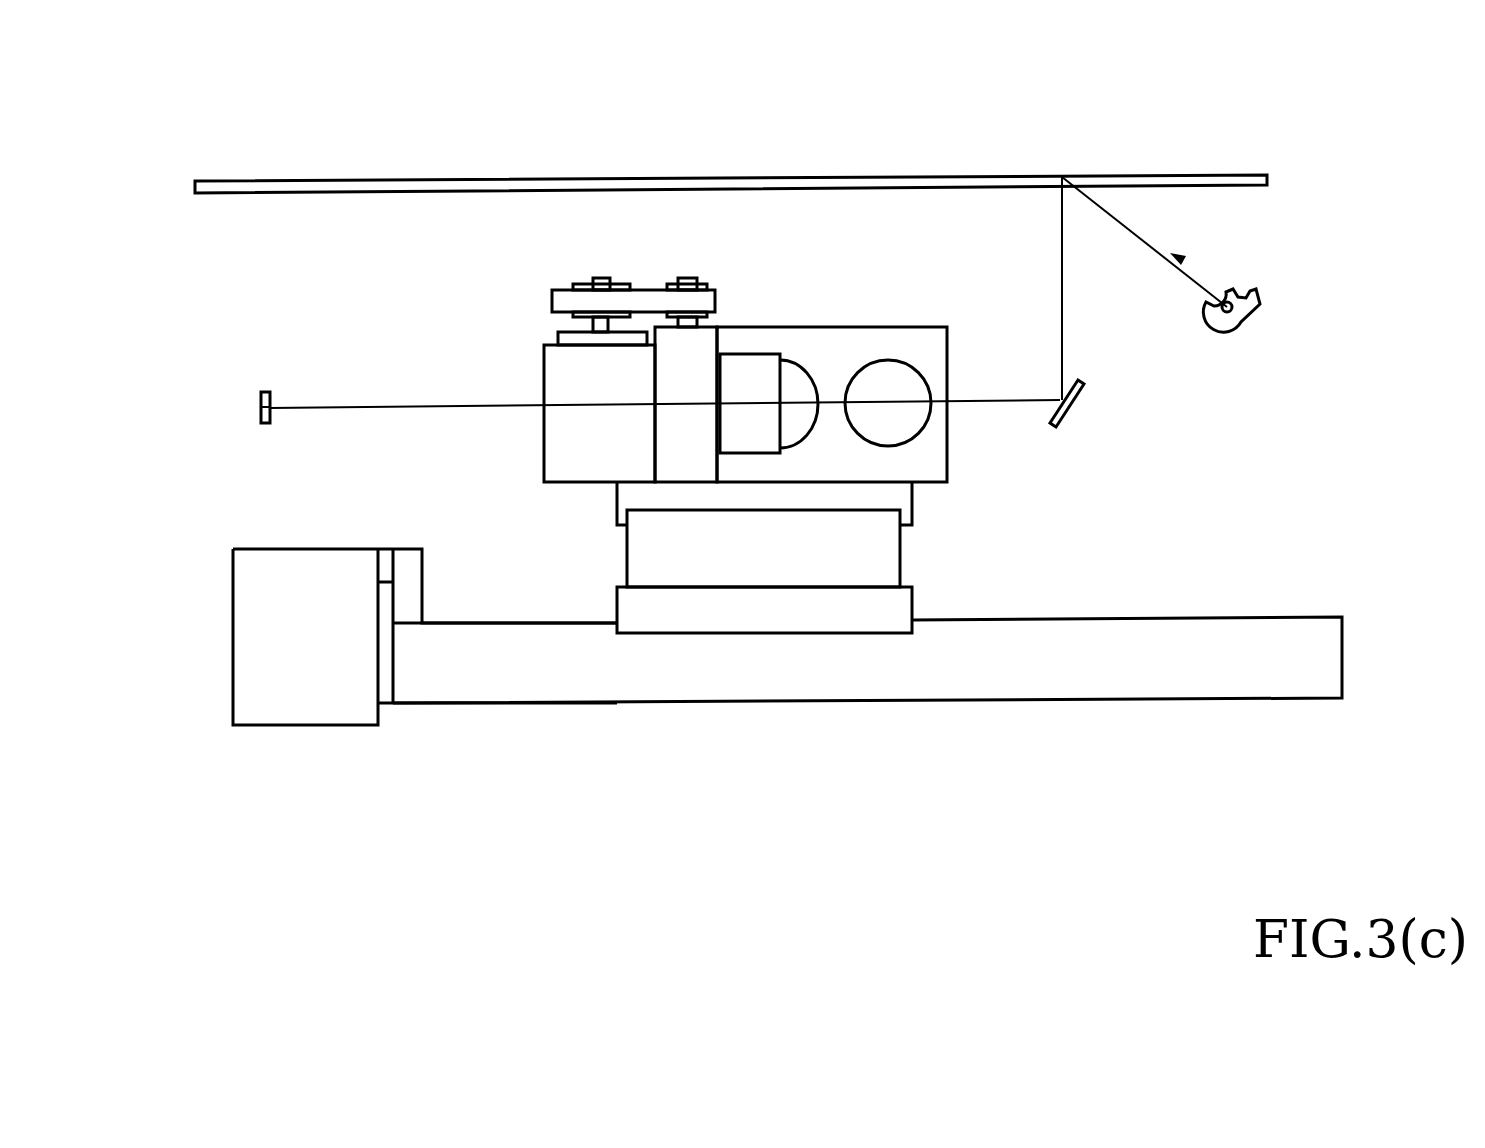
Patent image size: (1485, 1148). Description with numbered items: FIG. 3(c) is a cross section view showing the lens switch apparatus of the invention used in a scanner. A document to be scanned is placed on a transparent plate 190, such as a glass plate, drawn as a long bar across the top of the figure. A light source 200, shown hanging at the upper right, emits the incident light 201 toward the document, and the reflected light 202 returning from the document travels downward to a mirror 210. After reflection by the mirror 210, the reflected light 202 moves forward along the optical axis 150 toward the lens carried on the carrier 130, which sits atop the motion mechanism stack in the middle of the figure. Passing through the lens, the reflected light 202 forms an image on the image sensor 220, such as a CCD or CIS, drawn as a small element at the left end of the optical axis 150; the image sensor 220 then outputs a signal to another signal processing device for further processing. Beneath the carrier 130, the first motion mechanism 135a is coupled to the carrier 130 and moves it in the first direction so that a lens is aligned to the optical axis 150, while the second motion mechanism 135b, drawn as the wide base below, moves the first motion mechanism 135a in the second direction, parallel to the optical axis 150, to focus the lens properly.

The carrier 130 is at (890, 552).
The first motion mechanism 135a is at (902, 600).
The second motion mechanism 135b is at (1095, 668).
The optical axis 150 is at (448, 405).
The transparent plate 190 is at (548, 178).
The light source 200 is at (1247, 317).
The incident light 201 is at (1183, 256).
The reflected light 202 is at (1062, 285).
The mirror 210 is at (1068, 403).
The image sensor 220 is at (258, 405).